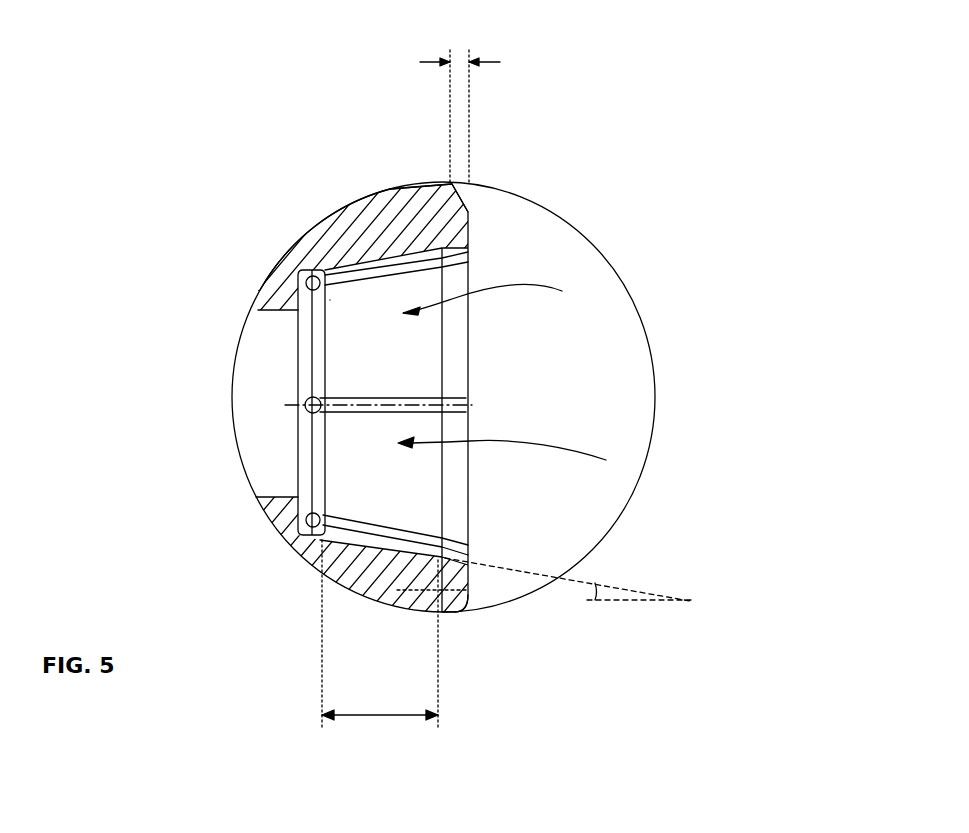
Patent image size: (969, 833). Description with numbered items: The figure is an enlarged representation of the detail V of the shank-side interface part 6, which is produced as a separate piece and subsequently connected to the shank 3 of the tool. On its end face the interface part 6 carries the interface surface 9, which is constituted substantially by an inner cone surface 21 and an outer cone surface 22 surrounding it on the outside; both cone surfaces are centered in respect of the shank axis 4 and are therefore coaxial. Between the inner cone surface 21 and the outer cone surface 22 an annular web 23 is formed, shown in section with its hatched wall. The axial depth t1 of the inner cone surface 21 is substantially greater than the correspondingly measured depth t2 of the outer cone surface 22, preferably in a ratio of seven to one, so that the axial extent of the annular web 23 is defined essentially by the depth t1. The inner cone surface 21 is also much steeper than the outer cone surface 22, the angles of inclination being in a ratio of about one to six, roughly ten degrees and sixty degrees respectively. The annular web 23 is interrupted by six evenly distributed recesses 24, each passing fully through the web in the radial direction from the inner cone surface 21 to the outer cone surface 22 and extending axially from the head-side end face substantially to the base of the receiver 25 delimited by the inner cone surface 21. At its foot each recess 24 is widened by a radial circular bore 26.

The shank 3 is at (482, 387).
The interface part 6 is at (342, 208).
The annular web 23 is at (408, 185).
The outer cone surface 22 is at (460, 196).
The recesses 24 is at (468, 258).
The radial circular bore 26 is at (312, 275).
The inner cone surface 21 is at (403, 345).
The interface surface 9 is at (492, 300).
The receiver 25 is at (521, 459).
The shank axis 4 is at (488, 407).
The detail V is at (605, 254).
The axial depth of the inner cone surface t1 is at (378, 720).
The depth of the outer cone surface t2 is at (458, 52).